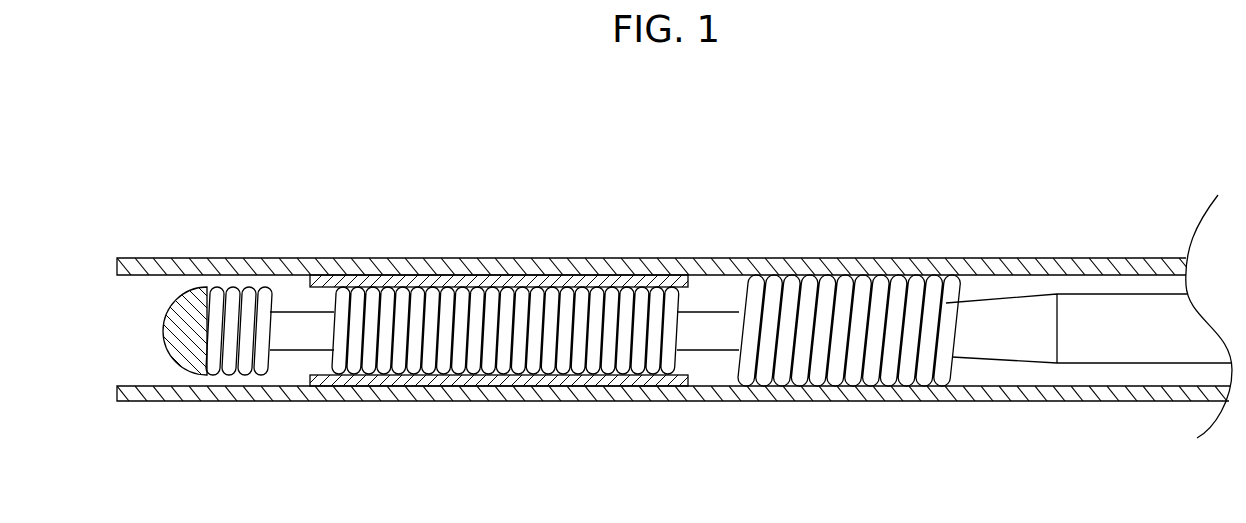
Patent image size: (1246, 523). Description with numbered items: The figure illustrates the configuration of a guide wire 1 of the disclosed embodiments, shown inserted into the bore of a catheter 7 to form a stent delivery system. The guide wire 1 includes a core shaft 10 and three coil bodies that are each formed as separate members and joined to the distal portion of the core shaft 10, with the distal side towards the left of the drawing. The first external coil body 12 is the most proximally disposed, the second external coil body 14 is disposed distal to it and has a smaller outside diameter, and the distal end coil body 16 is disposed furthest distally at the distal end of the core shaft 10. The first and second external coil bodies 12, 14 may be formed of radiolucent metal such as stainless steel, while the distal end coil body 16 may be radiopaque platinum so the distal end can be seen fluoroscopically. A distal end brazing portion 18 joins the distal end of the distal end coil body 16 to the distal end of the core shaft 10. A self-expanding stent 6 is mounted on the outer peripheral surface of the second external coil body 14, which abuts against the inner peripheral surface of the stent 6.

The guide wire 1 is at (1147, 291).
The catheter 7 is at (425, 265).
The self-expanding stent 6 is at (632, 277).
The distal end brazing portion 18 is at (180, 355).
The distal end coil body 16 is at (235, 297).
The second external coil body 14 is at (507, 362).
The first external coil body 12 is at (848, 375).
The core shaft 10 is at (1125, 353).